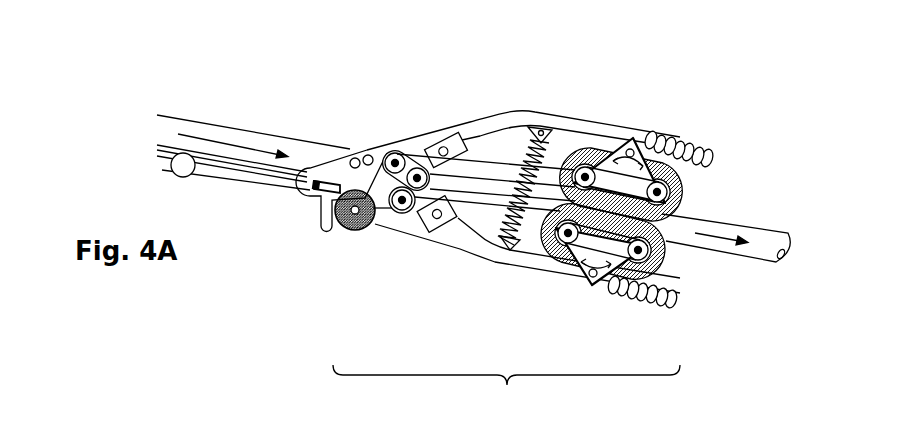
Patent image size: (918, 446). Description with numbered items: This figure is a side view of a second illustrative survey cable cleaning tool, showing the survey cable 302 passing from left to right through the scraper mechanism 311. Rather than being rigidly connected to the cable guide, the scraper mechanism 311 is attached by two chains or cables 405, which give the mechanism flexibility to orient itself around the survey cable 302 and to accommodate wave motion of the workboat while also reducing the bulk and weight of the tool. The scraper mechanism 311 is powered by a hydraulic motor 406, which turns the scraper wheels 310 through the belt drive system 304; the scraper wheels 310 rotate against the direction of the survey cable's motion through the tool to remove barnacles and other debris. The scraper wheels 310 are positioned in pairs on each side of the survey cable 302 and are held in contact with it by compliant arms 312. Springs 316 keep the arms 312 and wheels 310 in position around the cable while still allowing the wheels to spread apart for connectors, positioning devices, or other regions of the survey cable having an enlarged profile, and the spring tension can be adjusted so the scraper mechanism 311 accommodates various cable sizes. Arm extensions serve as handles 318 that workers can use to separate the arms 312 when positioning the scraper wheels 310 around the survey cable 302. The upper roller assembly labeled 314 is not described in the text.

The survey cable 302 is at (203, 124).
The chains or cables 405 is at (245, 178).
The hydraulic motor 406 is at (385, 146).
The compliant arms 312 is at (586, 122).
The scraper wheels 310 is at (667, 258).
The upper roller drive assembly 314 is at (684, 191).
The springs 316 is at (511, 247).
The handles 318 is at (693, 140).
The belt drive system 304 is at (378, 231).
The scraper mechanism 311 is at (506, 390).